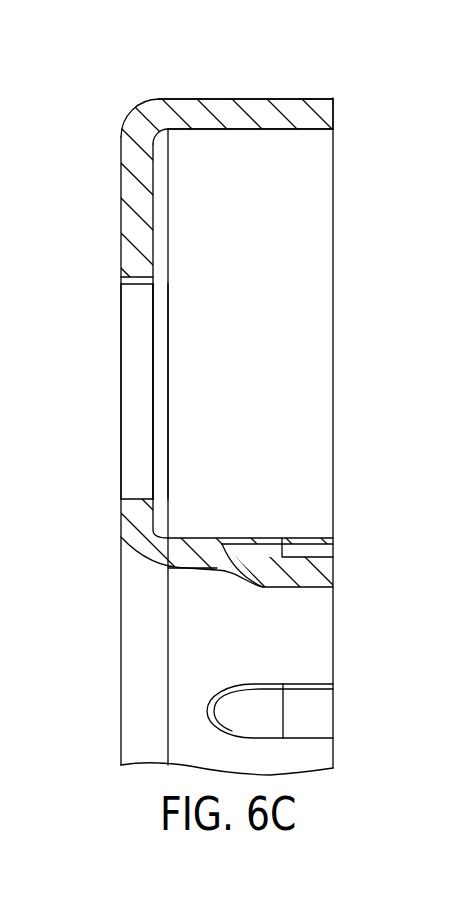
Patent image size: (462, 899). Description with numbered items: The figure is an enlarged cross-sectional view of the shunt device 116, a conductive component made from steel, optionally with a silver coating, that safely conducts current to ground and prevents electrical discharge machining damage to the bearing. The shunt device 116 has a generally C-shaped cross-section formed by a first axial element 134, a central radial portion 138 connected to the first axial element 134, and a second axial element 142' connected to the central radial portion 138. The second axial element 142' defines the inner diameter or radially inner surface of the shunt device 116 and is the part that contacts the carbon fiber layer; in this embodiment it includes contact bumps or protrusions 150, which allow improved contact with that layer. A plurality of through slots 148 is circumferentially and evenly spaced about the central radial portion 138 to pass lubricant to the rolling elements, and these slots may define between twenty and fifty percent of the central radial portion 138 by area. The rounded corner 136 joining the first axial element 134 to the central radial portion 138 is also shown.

The shunt device 116 is at (275, 98).
The first axial element 134 is at (325, 115).
The rounded corner 136 is at (138, 127).
The central radial portion 138 is at (105, 129).
The through slots 148 is at (132, 472).
The second axial element 142' is at (206, 627).
The contact bumps or protrusions 150 is at (305, 570).